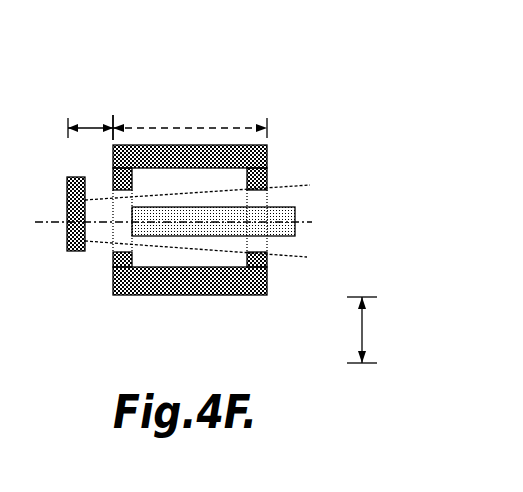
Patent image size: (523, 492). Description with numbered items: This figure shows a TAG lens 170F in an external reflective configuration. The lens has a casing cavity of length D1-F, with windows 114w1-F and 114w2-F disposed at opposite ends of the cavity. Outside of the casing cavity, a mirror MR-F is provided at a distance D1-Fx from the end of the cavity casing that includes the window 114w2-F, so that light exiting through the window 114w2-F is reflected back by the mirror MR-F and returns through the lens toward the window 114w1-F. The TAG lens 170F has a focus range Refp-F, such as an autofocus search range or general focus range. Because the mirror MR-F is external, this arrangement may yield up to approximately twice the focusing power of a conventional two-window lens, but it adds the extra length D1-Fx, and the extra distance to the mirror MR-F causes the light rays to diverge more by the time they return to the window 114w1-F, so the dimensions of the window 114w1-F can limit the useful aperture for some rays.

The TAG lens 170F is at (82, 58).
The distance from cavity end to mirror D1-Fx is at (89, 128).
The casing cavity length D1-F is at (190, 128).
The window 114w1-F is at (265, 190).
The window 114w2-F is at (114, 236).
The mirror MR-F is at (67, 234).
The focus range Refp-F is at (361, 335).